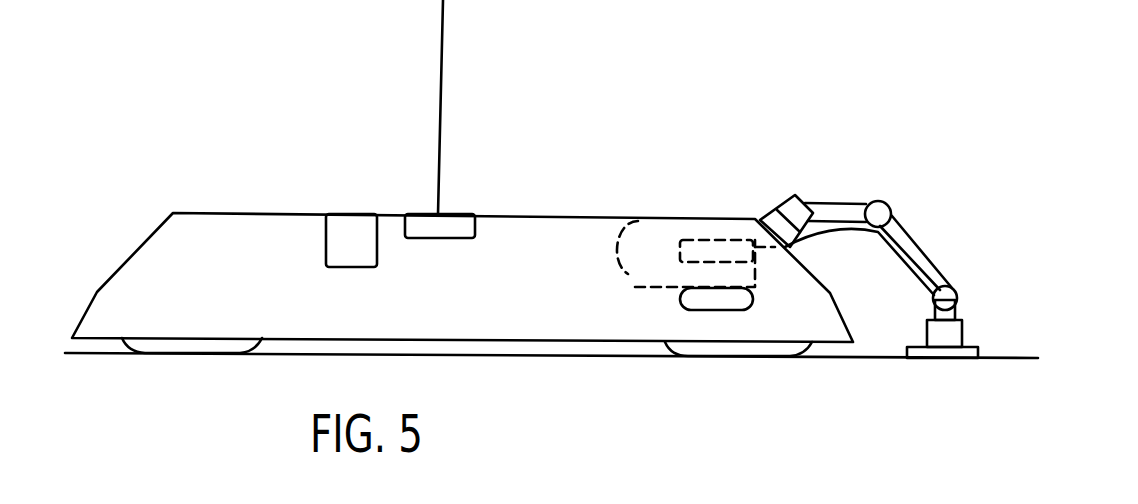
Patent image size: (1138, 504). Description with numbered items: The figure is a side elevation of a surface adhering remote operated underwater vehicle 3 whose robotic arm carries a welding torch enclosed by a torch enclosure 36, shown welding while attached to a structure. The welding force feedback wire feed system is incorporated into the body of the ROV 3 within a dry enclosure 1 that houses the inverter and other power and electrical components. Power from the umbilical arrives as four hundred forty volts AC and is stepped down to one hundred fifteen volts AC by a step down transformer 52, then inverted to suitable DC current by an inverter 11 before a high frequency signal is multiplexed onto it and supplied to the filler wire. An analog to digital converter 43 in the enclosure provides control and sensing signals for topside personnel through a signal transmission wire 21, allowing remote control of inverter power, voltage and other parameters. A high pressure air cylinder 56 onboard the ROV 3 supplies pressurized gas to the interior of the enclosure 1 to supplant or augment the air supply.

The enclosure 1 is at (657, 227).
The remote operated underwater vehicle 3 is at (215, 227).
The inverter 11 is at (725, 240).
The signal transmission wire 21 is at (440, 60).
The torch enclosure 36 is at (950, 333).
The analog to digital converter 43 is at (430, 223).
The step down transformer 52 is at (345, 225).
The high pressure air cylinder 56 is at (692, 303).